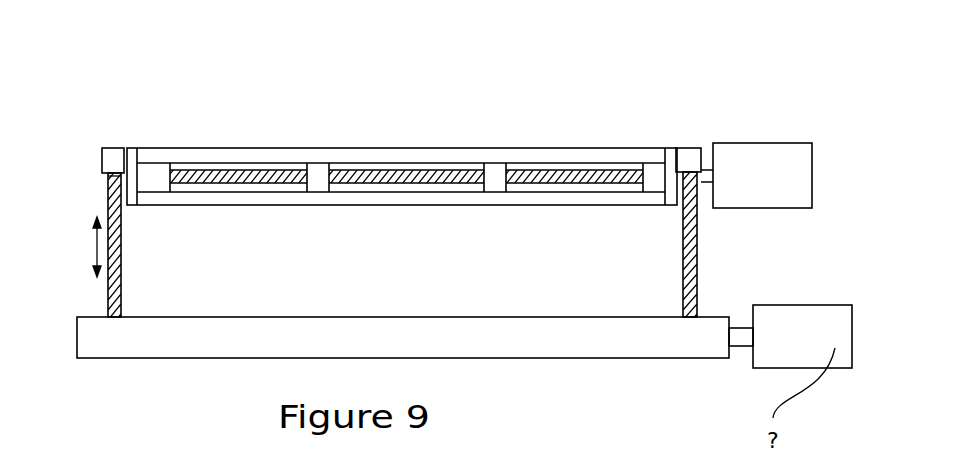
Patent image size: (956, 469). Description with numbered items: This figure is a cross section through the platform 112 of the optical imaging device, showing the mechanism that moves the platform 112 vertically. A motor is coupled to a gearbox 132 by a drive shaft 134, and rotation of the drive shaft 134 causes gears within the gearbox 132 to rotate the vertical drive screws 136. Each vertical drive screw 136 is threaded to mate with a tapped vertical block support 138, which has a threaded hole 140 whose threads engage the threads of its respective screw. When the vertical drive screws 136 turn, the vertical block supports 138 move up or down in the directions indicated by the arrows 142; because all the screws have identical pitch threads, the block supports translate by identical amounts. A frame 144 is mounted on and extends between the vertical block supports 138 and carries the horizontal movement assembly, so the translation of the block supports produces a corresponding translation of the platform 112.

The platform 112 is at (695, 55).
The gearbox 132 is at (595, 343).
The drive shaft 134 is at (742, 345).
The vertical drive screws 136 is at (122, 258).
The vertical block supports 138 is at (115, 155).
The threaded hole 140 is at (108, 183).
The arrows 142 is at (95, 252).
The frame 144 is at (138, 155).